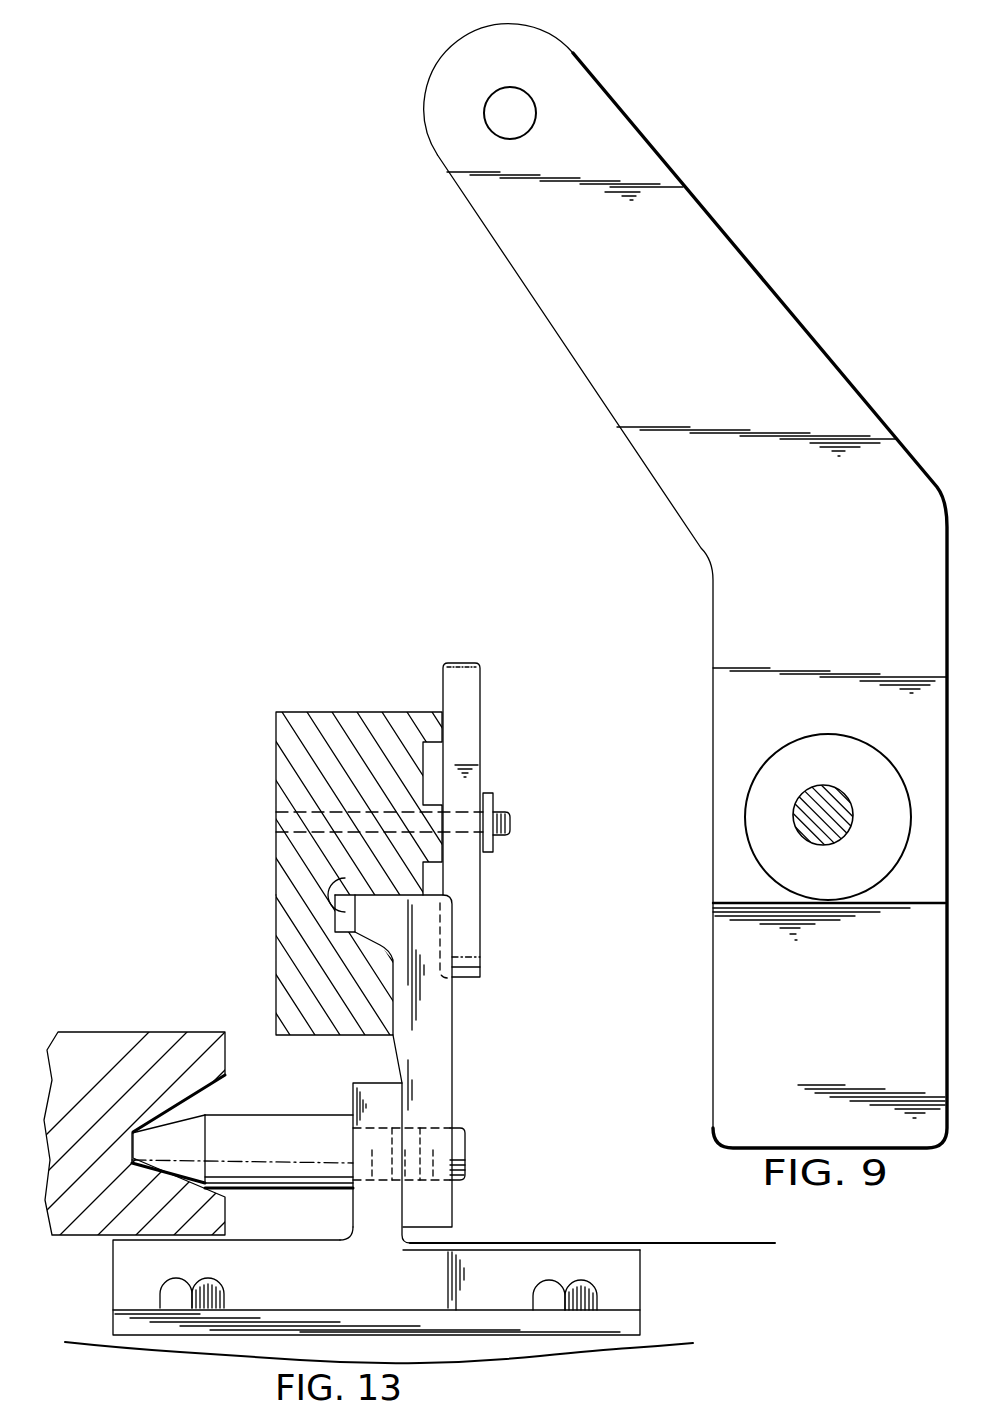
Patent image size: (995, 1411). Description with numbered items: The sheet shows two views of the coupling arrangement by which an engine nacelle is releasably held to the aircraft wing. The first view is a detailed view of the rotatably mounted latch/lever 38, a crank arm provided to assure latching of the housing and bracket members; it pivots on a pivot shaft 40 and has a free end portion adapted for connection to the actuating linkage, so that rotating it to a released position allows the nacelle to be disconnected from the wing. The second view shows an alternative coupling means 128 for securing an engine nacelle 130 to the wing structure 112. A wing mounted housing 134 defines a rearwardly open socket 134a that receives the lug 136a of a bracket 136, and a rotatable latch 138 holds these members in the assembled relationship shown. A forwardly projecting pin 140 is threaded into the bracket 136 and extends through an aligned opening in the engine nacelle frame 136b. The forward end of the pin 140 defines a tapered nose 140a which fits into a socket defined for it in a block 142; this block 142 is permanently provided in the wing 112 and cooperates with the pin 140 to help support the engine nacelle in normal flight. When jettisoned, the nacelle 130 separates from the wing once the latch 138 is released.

In FIG. 9, the latch/lever 38 is at (763, 280).
In FIG. 9, the pivot shaft 40 is at (831, 793).
In FIG. 13, the wing structure 112 is at (674, 1248).
In FIG. 13, the alternative coupling means 128 is at (272, 981).
In FIG. 13, the engine nacelle 130 is at (650, 1338).
In FIG. 13, the wing mounted housing 134 is at (276, 756).
In FIG. 13, the rearwardly open socket 134a is at (340, 875).
In FIG. 13, the bracket 136 is at (454, 1043).
In FIG. 13, the lug 136a is at (337, 933).
In FIG. 13, the engine nacelle frame 136b is at (485, 1245).
In FIG. 13, the rotatable latch 138 is at (481, 703).
In FIG. 13, the pin 140 is at (282, 1128).
In FIG. 13, the tapered nose 140a is at (178, 1143).
In FIG. 13, the block 142 is at (93, 1032).